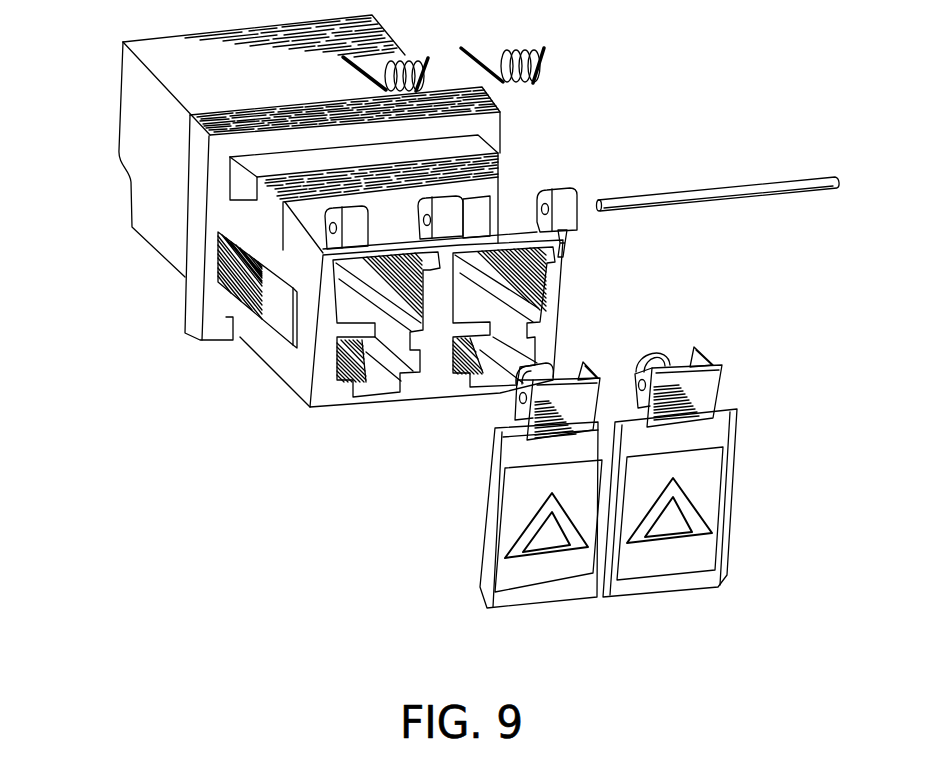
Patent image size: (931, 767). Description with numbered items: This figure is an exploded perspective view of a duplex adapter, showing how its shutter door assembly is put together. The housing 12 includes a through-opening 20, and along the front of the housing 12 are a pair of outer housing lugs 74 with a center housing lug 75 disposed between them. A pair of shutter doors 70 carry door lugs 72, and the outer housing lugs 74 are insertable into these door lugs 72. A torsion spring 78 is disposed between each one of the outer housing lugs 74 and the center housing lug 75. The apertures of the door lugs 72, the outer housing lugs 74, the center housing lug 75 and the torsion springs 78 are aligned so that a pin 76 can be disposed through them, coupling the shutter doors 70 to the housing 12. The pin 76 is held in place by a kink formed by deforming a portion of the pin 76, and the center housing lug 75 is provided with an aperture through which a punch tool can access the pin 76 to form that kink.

The housing 12 is at (145, 106).
The through-opening 20 is at (365, 380).
The shutter doors 70 is at (697, 580).
The door lugs 72 is at (720, 364).
The outer housing lugs 74 is at (560, 192).
The center housing lug 75 is at (473, 215).
The pin 76 is at (748, 183).
The torsion spring 78 is at (545, 67).